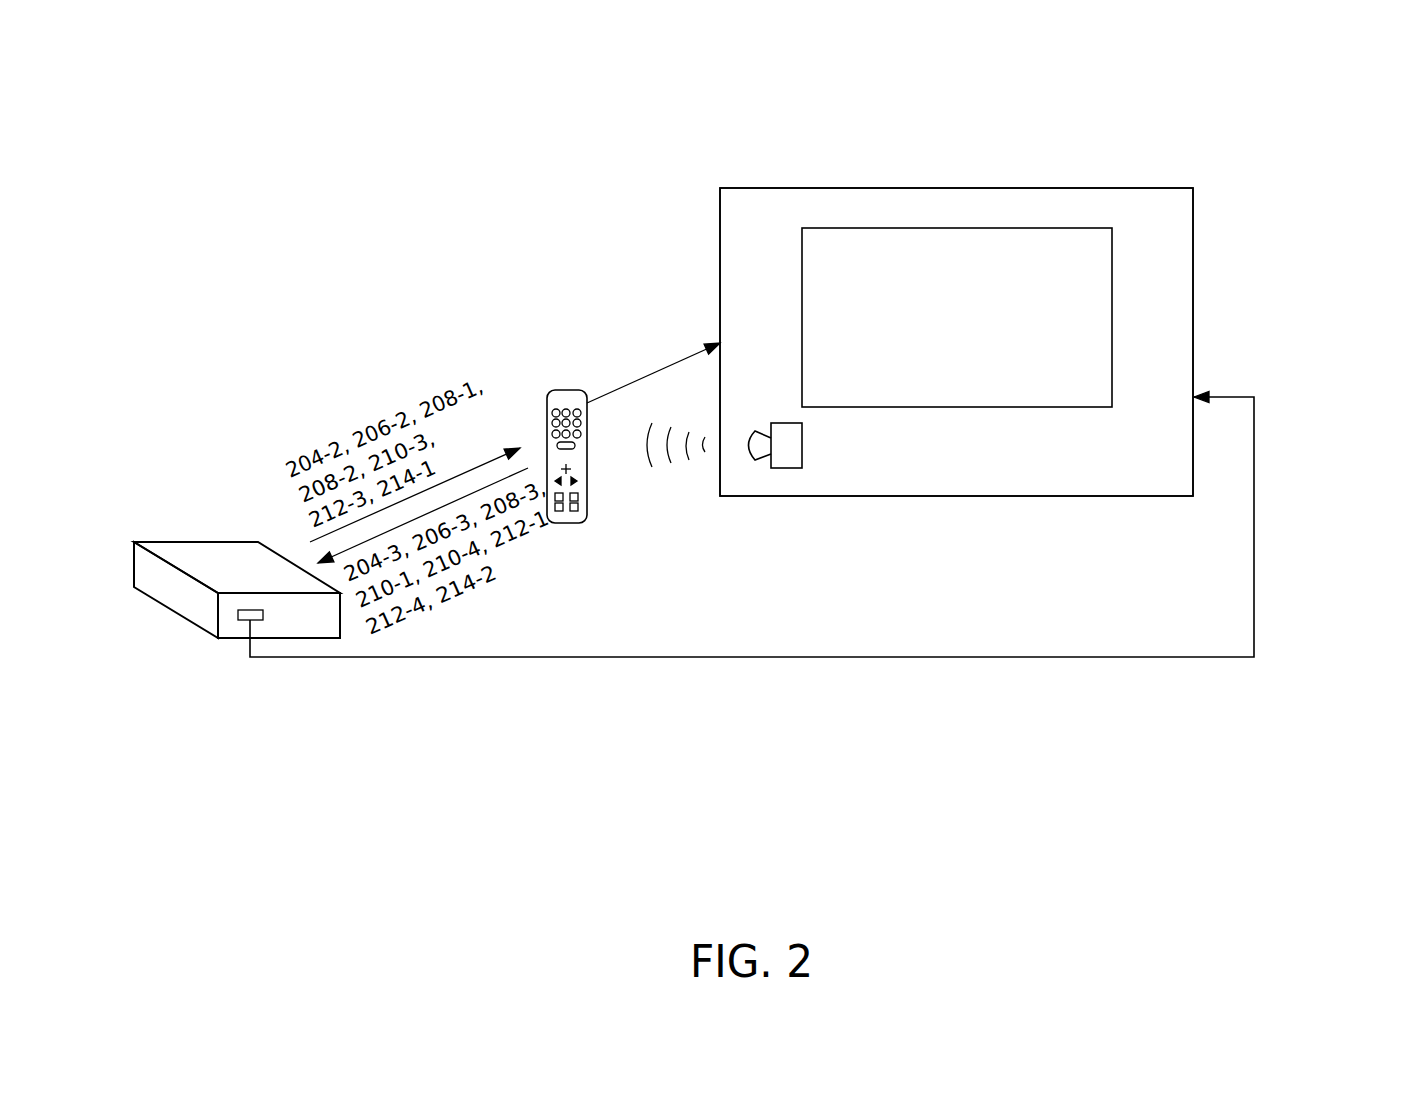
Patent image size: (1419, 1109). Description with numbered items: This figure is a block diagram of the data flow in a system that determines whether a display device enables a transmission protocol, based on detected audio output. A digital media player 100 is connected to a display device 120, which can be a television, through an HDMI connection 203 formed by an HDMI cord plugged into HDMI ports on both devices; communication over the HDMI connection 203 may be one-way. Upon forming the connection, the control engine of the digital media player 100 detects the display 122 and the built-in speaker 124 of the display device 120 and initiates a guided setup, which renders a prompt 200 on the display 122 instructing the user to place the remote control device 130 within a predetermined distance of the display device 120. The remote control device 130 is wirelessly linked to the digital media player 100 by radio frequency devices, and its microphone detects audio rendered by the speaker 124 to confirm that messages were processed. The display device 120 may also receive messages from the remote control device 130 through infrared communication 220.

The digital media player 100 is at (230, 556).
The display device 120 is at (1237, 219).
The display 122 is at (750, 215).
The speaker 124 is at (775, 460).
The remote control device 130 is at (559, 389).
The prompt 200 is at (872, 229).
The HDMI connection 203 is at (1255, 610).
The infrared communication 220 is at (647, 370).